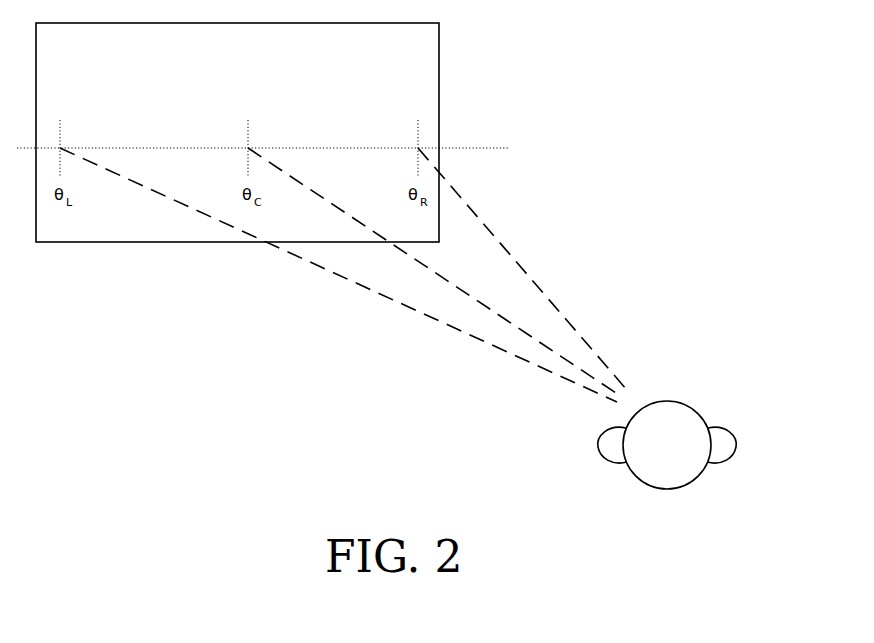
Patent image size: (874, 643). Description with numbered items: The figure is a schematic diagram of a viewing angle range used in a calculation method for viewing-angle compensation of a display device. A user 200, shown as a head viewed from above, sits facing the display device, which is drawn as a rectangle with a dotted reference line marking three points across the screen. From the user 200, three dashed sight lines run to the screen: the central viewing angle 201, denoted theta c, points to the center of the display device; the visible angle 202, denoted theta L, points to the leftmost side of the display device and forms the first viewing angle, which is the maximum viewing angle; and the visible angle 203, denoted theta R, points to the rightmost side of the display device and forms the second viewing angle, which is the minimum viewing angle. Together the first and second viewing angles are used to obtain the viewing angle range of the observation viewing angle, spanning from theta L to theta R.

The user 200 is at (667, 398).
The central viewing angle 201 is at (443, 280).
The visible angle on leftmost side 202 is at (353, 282).
The visible angle on rightmost side 203 is at (528, 267).